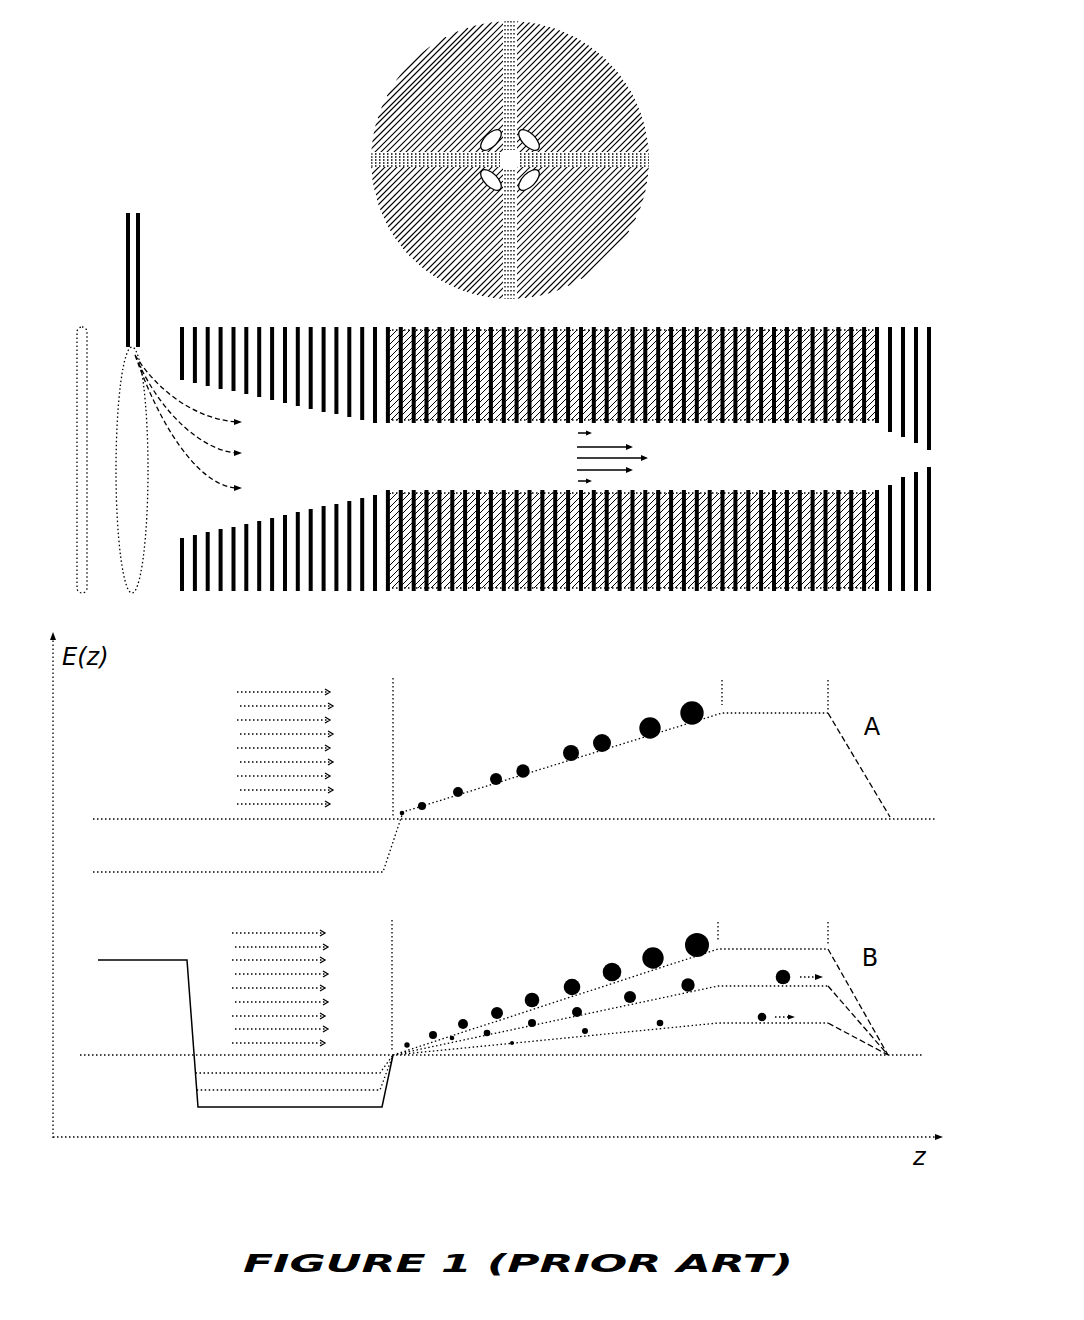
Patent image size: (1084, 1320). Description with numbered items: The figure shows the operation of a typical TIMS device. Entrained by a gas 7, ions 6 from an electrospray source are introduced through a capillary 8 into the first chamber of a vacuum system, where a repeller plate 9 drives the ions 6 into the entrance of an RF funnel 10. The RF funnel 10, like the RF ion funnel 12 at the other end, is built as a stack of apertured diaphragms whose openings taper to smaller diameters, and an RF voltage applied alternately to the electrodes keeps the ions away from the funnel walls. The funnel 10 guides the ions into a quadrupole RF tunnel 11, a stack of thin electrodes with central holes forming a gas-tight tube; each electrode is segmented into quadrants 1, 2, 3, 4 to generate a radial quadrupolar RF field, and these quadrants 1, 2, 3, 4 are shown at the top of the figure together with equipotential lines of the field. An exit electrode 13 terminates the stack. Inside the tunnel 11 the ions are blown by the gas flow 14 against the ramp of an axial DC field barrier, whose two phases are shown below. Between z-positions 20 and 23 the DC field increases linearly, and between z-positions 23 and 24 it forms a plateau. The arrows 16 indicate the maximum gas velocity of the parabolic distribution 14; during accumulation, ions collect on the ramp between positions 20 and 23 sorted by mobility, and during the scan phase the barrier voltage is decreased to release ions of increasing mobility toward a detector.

The quadrant 1 is at (510, 160).
The quadrant 2 is at (510, 160).
The quadrant 3 is at (510, 160).
The quadrant 4 is at (510, 160).
The ions 6 is at (188, 423).
The gas 7 is at (132, 470).
The capillary 8 is at (145, 280).
The repeller plate 9 is at (82, 448).
The RF funnel 10 is at (182, 315).
The quadrupole RF tunnel 11 is at (391, 315).
The RF ion funnel 12 is at (921, 315).
The exit electrode 13 is at (929, 324).
The gas flow 14 is at (595, 457).
The arrows 16 is at (282, 867).
The z-position 20 is at (394, 848).
The z-position 23 is at (720, 797).
The z-position 24 is at (829, 799).